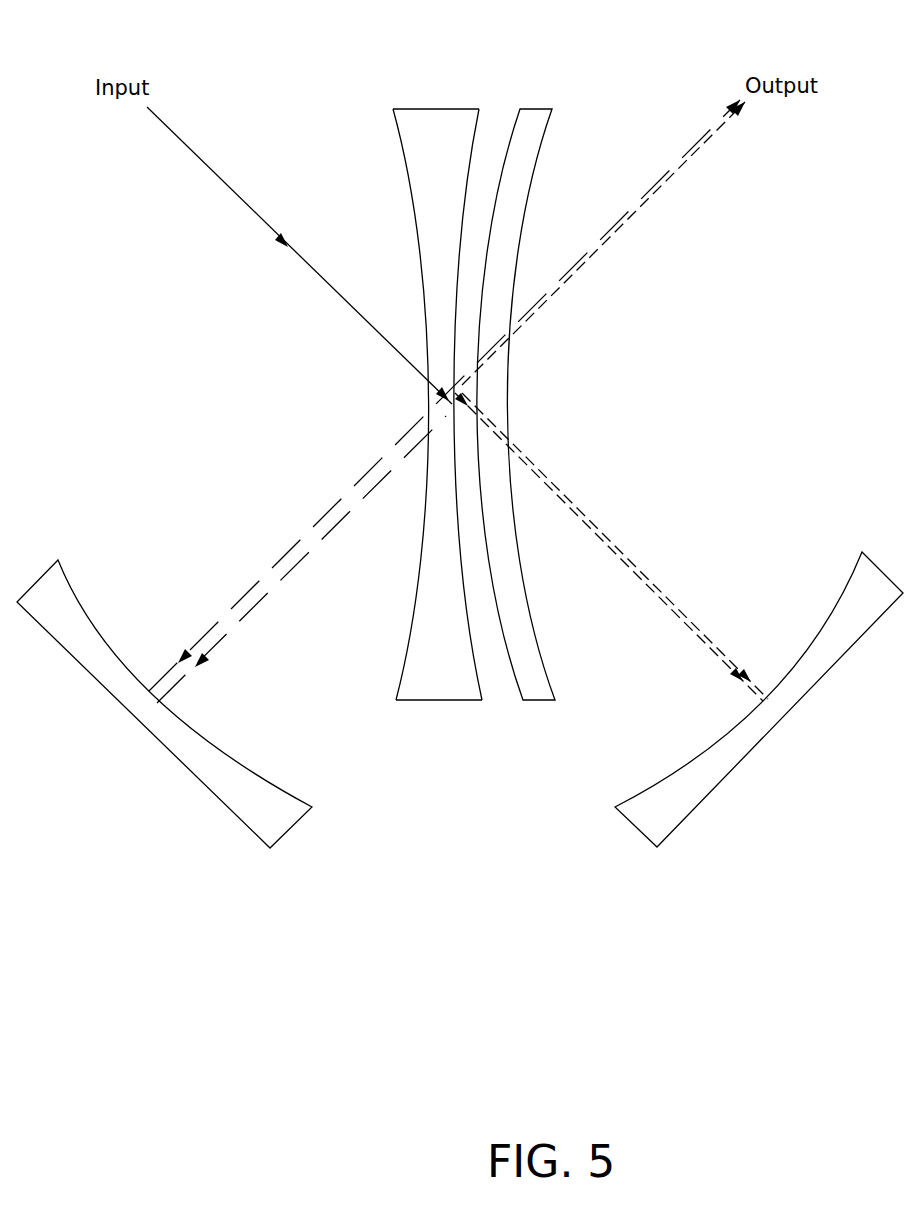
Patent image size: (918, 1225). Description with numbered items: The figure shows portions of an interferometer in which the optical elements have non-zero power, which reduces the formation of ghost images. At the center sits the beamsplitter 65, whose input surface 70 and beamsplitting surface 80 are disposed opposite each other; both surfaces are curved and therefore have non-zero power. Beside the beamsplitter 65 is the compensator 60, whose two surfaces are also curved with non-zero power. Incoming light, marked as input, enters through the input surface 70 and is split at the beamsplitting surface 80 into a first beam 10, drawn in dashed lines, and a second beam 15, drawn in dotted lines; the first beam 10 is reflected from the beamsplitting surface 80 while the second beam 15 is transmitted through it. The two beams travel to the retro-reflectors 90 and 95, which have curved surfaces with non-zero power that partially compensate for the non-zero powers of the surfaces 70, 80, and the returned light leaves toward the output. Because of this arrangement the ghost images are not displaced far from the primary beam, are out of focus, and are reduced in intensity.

The first beam 10 is at (368, 477).
The second beam 15 is at (560, 497).
The compensator 60 is at (537, 108).
The beamsplitter 65 is at (440, 700).
The input surface 70 is at (400, 148).
The beamsplitting surface 80 is at (460, 533).
The retro-reflector 90 is at (228, 812).
The retro-reflector 95 is at (708, 795).